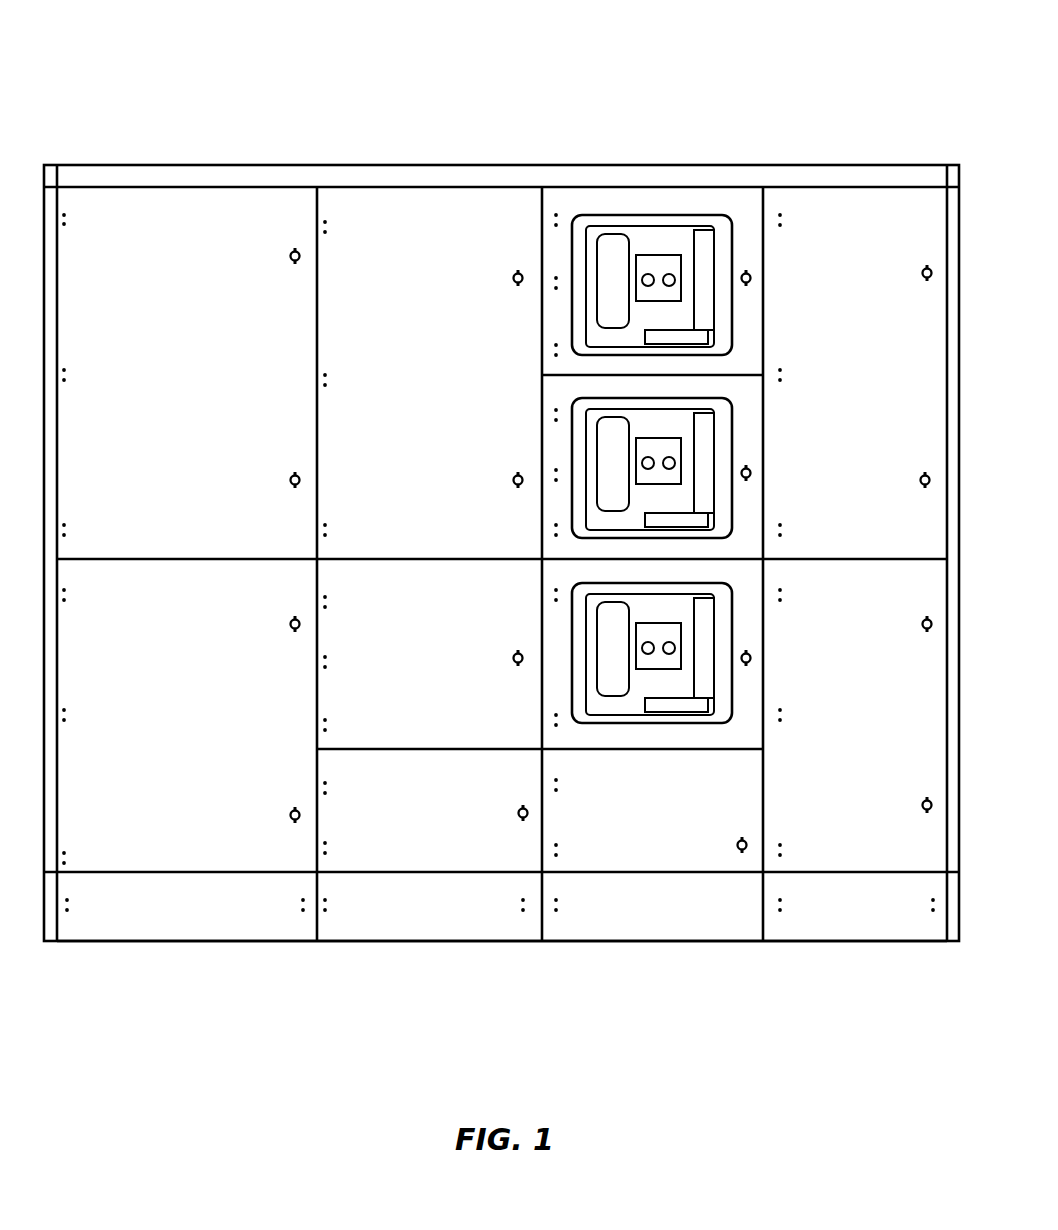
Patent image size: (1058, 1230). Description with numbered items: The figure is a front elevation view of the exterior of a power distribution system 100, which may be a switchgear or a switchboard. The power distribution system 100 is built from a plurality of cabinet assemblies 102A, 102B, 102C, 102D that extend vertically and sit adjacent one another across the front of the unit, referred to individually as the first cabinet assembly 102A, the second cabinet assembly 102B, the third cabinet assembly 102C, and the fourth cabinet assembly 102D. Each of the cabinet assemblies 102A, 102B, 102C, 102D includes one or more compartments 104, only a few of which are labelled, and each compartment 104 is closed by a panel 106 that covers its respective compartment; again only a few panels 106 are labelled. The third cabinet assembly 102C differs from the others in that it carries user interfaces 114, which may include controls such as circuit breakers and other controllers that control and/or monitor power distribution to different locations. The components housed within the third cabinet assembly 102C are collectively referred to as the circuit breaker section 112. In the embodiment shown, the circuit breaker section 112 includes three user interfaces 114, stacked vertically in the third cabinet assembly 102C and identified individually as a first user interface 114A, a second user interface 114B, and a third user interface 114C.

The power distribution system 100 is at (772, 52).
The first cabinet assembly 102A is at (195, 180).
The second cabinet assembly 102B is at (418, 180).
The third cabinet assembly 102C is at (681, 180).
The fourth cabinet assembly 102D is at (834, 180).
The compartment 104 is at (281, 187).
The panel 106 is at (168, 391).
The circuit breaker section 112 is at (683, 890).
The user interface 114 is at (714, 503).
The first user interface 114A is at (732, 237).
The second user interface 114B is at (732, 425).
The third user interface 114C is at (732, 616).